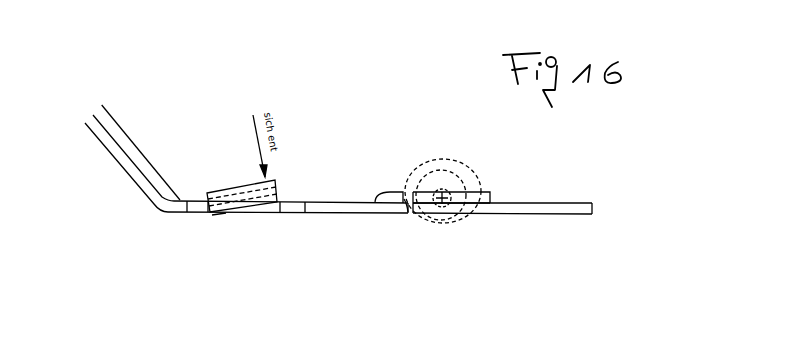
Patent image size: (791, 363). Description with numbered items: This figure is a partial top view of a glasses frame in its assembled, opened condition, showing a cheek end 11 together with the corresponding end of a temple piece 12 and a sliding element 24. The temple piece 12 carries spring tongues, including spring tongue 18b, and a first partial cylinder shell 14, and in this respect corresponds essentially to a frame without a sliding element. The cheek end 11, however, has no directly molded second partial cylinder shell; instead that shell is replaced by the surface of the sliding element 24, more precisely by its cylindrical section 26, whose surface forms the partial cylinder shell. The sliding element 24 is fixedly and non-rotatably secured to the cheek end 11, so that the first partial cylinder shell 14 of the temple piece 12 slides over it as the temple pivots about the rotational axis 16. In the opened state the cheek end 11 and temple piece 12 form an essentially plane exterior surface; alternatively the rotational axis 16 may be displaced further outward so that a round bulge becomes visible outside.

The cheek end 11 is at (163, 212).
The temple piece 12 is at (533, 210).
The first partial cylinder shell 14 is at (432, 165).
The rotational axis 16 is at (420, 215).
The spring tongue 18b is at (457, 218).
The sliding element 24 is at (437, 223).
The cylindrical section 26 is at (460, 175).